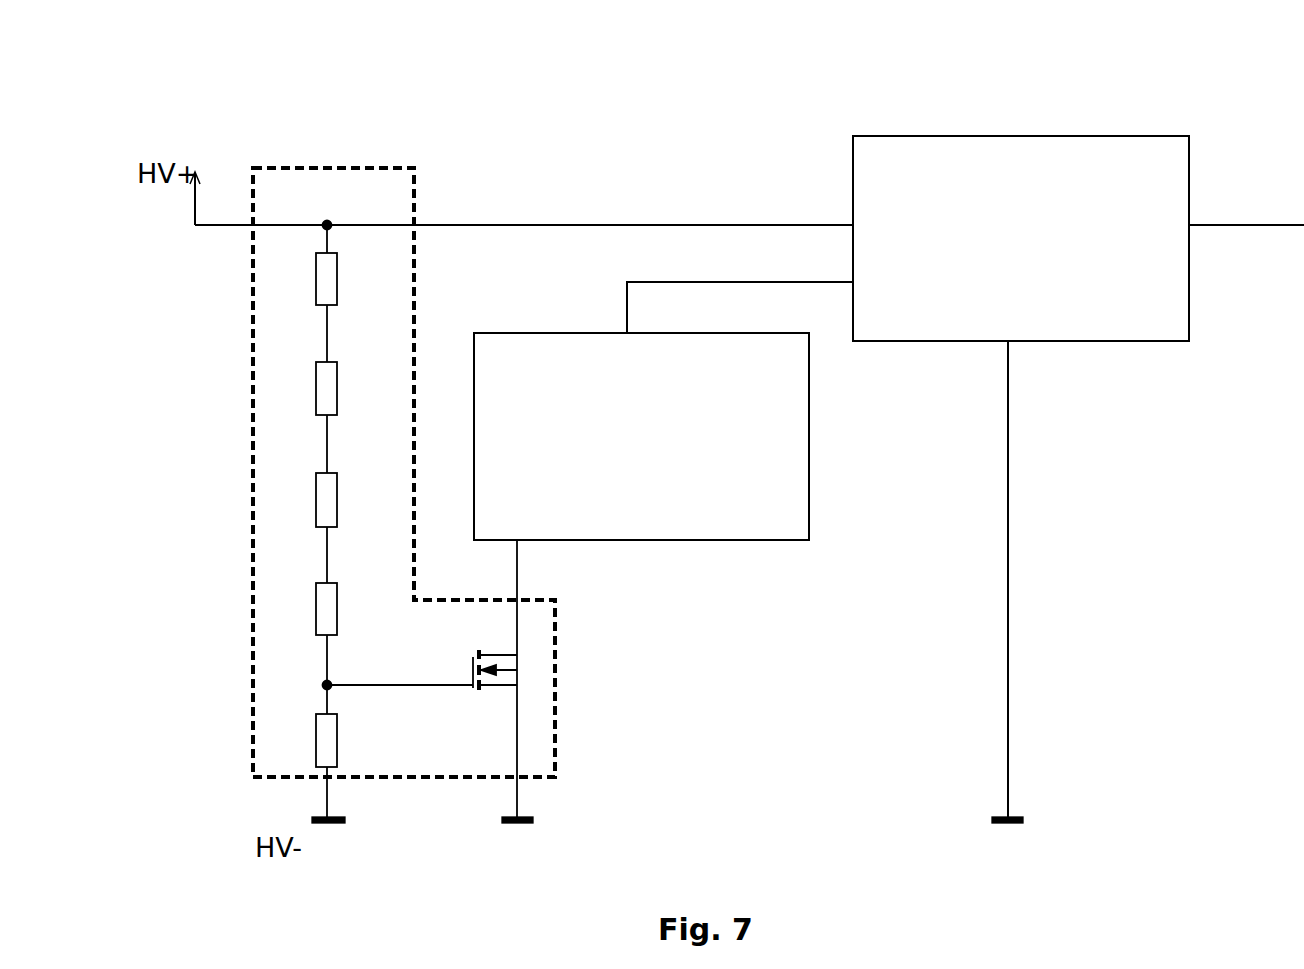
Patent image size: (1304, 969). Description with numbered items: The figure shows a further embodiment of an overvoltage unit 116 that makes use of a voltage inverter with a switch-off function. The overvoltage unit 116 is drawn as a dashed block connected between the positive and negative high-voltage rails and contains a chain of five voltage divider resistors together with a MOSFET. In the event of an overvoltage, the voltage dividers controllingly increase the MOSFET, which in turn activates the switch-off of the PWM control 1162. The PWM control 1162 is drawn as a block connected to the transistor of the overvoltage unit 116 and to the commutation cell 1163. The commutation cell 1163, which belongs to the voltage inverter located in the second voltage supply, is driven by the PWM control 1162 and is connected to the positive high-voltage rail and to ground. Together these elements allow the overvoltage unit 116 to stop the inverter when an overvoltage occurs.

The overvoltage unit 116 is at (350, 167).
The PWM control 1162 is at (755, 540).
The commutation cell 1163 is at (1152, 136).